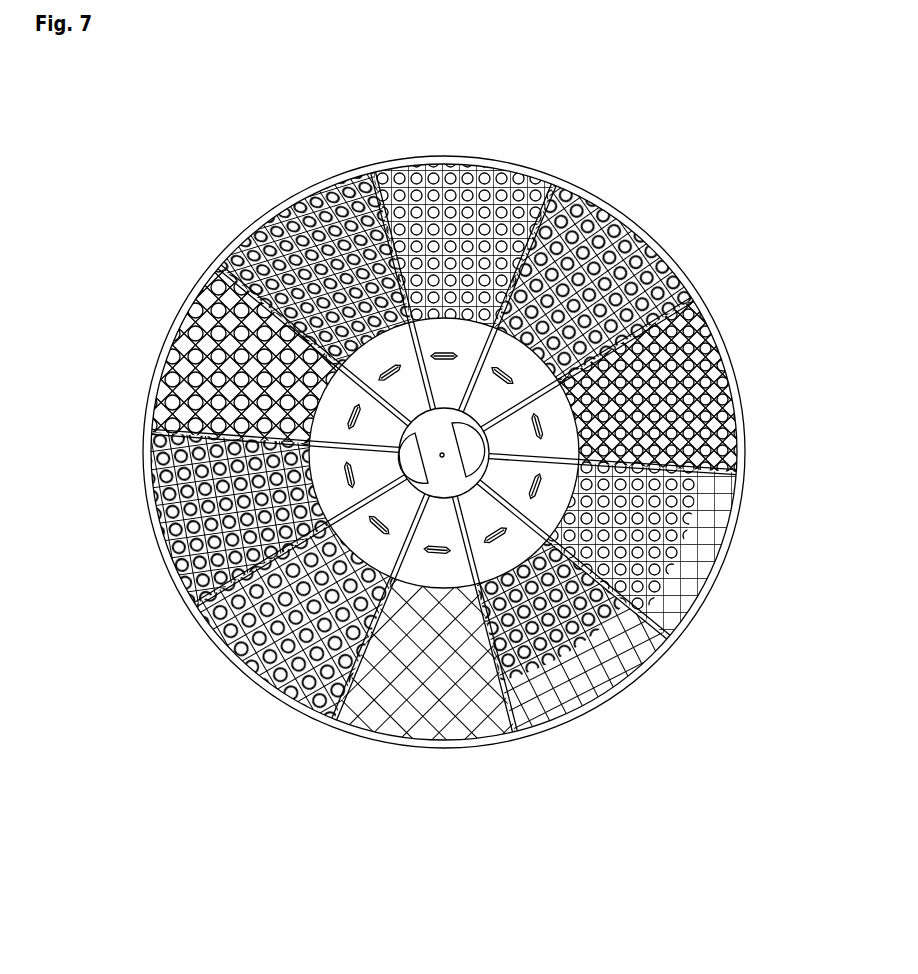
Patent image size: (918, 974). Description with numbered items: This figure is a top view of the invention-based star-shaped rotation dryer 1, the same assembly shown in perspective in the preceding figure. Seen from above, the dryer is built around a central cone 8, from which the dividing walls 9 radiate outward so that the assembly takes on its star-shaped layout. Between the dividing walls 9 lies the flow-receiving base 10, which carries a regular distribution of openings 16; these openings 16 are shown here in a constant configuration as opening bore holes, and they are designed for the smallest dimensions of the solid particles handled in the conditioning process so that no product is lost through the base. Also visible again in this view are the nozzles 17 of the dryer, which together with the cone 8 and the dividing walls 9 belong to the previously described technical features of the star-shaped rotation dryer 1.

The star-shaped rotation dryer 1 is at (397, 470).
The cone 8 is at (452, 453).
The dividing walls 9 is at (227, 440).
The flow-receiving base 10 is at (617, 240).
The openings 16 is at (312, 687).
The nozzles 17 is at (502, 373).